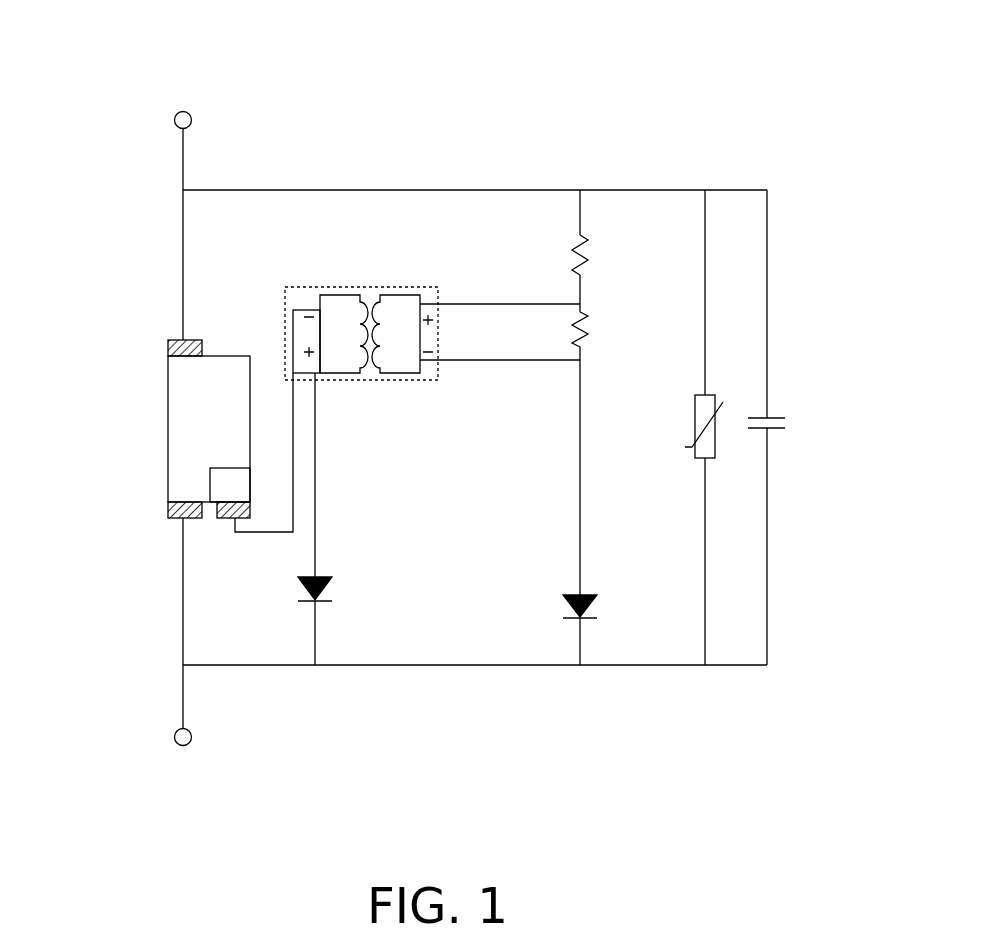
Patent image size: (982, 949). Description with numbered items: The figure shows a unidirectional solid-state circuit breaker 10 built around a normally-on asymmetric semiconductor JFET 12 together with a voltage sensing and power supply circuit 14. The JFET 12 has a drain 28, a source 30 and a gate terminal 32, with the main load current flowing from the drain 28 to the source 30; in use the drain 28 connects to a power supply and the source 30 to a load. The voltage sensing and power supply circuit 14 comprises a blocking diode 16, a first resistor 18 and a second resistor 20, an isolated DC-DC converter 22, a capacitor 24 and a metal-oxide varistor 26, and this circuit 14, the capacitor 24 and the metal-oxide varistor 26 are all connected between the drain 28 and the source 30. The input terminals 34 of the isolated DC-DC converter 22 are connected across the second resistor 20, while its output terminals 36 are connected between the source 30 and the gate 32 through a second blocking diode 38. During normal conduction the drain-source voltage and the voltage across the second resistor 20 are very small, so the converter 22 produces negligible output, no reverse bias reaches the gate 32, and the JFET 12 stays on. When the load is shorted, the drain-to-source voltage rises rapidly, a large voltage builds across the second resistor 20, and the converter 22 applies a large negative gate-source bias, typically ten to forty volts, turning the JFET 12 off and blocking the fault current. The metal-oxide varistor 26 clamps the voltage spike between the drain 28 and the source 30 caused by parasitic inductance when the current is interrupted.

The unidirectional solid-state circuit breaker 10 is at (583, 70).
The normally-on asymmetric JFET 12 is at (182, 423).
The voltage sensing and power supply circuit 14 is at (682, 153).
The blocking diode 16 is at (583, 590).
The first resistor 18 is at (577, 243).
The second resistor 20 is at (582, 347).
The isolated DC-DC converter 22 is at (417, 288).
The capacitor 24 is at (770, 415).
The metal-oxide varistor 26 is at (710, 448).
The drain 28 is at (167, 349).
The source 30 is at (167, 511).
The gate terminal 32 is at (273, 502).
The input terminals 34 is at (443, 305).
The output terminals 36 is at (318, 368).
The second blocking diode 38 is at (320, 578).